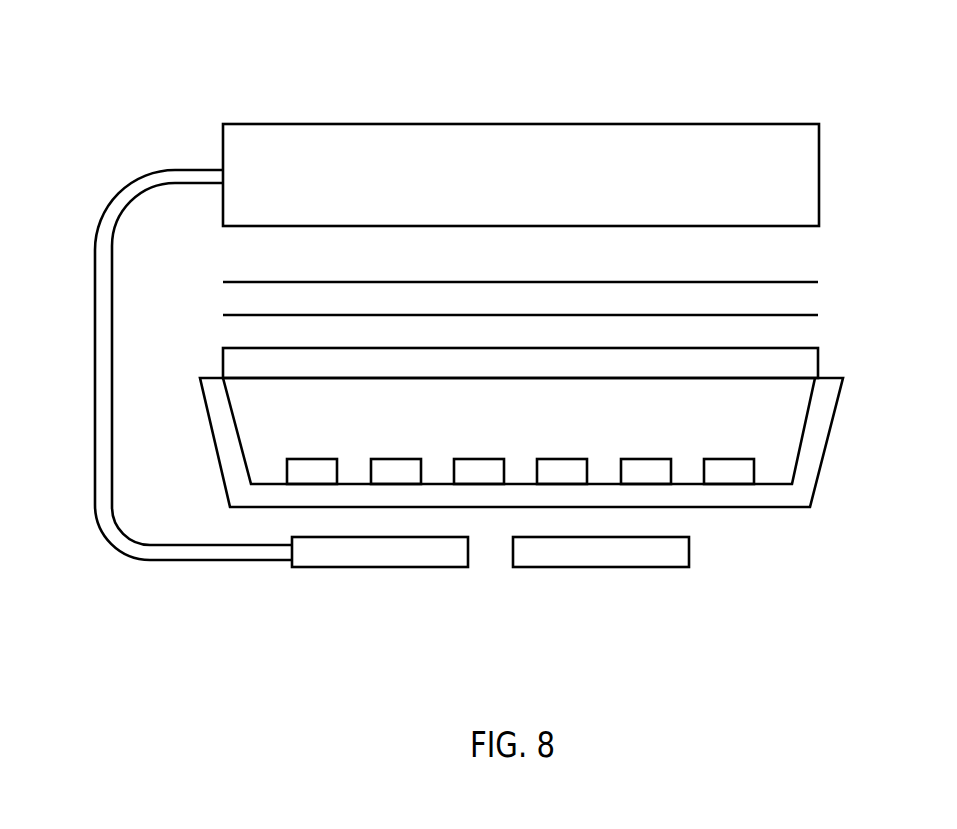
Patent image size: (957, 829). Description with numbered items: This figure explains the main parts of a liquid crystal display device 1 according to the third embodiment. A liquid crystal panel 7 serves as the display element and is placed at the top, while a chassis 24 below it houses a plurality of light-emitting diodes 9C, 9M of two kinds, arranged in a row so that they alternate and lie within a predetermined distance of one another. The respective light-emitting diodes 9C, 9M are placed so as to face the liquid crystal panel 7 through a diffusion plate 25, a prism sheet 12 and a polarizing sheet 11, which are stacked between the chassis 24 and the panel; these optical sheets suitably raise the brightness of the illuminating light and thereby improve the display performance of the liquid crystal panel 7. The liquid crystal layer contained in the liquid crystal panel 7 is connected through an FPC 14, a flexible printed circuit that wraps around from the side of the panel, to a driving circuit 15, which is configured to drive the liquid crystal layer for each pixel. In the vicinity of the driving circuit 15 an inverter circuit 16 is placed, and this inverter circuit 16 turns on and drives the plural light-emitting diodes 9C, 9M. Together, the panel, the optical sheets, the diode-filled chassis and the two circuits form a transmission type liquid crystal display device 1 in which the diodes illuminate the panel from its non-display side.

The image forming apparatus 1 is at (846, 93).
The liquid crystal panel 7 is at (819, 173).
The polarizing sheet 11 is at (807, 282).
The prism sheet 12 is at (807, 315).
The diffusion plate 25 is at (802, 363).
The chassis 24 is at (813, 433).
The light-emitting diode 9C is at (312, 466).
The light-emitting diode 9M is at (396, 466).
The FPC 14 is at (217, 553).
The driving circuit 15 is at (381, 555).
The inverter circuit 16 is at (602, 555).